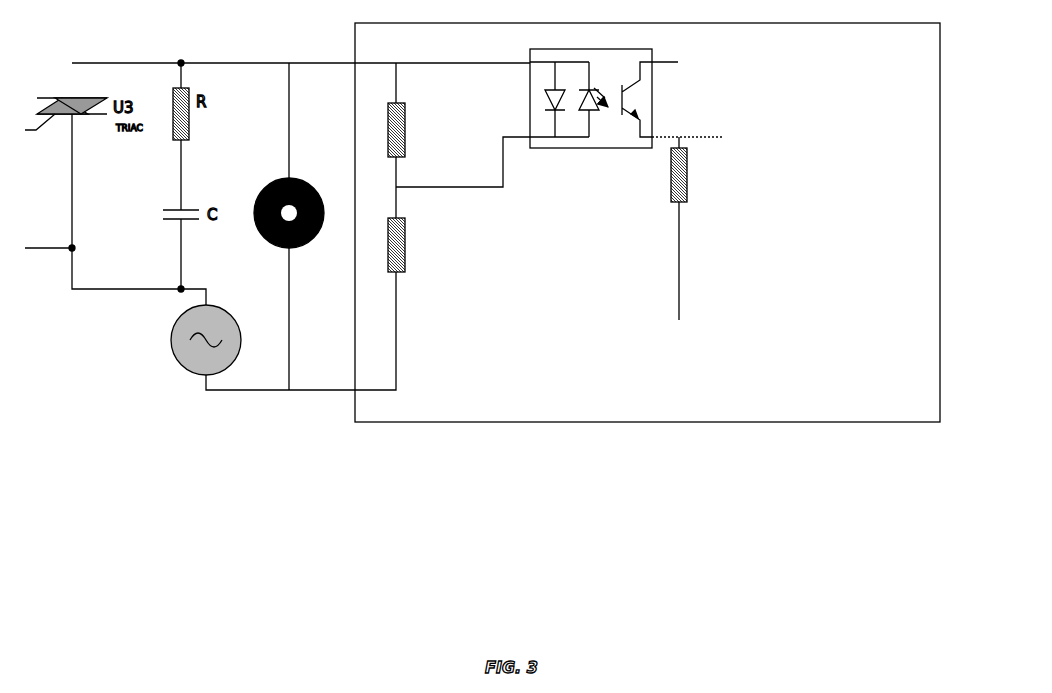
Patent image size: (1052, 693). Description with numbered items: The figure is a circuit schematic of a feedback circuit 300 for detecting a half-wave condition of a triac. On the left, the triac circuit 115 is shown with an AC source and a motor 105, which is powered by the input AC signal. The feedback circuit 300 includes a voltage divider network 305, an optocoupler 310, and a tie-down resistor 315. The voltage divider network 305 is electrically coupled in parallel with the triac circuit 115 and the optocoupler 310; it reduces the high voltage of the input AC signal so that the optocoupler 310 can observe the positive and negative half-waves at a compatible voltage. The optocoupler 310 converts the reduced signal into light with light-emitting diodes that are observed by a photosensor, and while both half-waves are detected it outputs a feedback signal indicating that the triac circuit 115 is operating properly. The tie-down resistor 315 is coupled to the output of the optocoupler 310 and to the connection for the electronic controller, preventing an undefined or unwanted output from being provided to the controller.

The triac circuit 115 is at (38, 97).
The motor 105 is at (300, 178).
The feedback circuit 300 is at (867, 455).
The voltage divider network 305 is at (422, 206).
The optocoupler 310 is at (604, 121).
The tie-down resistor 315 is at (700, 190).